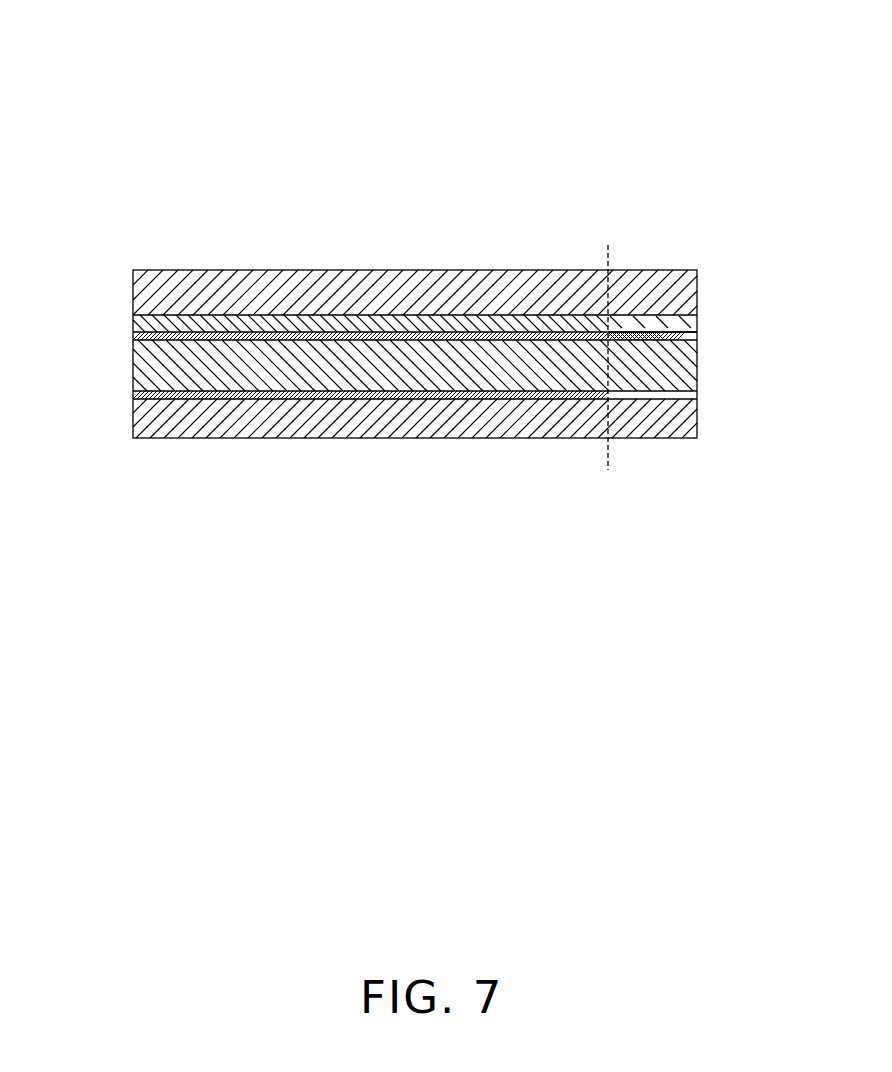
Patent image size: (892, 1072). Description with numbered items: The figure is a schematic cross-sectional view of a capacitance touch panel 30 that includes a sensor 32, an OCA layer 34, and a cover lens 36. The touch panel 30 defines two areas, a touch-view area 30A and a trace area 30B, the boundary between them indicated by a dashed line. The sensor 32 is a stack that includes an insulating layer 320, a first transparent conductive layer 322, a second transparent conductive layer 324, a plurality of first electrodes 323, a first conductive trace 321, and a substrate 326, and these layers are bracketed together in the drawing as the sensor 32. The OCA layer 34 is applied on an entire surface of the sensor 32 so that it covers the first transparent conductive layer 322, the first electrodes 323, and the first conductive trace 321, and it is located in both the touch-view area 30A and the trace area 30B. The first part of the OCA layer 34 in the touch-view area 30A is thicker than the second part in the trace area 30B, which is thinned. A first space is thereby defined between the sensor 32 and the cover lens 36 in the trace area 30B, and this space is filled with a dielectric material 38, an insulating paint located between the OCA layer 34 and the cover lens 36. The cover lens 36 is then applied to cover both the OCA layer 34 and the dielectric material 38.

The capacitance touch panel 30 is at (446, 53).
The touch-view area 30A is at (329, 292).
The trace area 30B is at (689, 349).
The sensor 32 is at (768, 248).
The OCA layer 34 is at (137, 327).
The cover lens 36 is at (143, 298).
The dielectric material 38 is at (698, 317).
The insulating layer 320 is at (668, 382).
The first conductive trace 321 is at (643, 318).
The first transparent conductive layer 322 is at (608, 347).
The first electrodes 323 is at (607, 322).
The second transparent conductive layer 324 is at (662, 403).
The substrate 326 is at (672, 428).